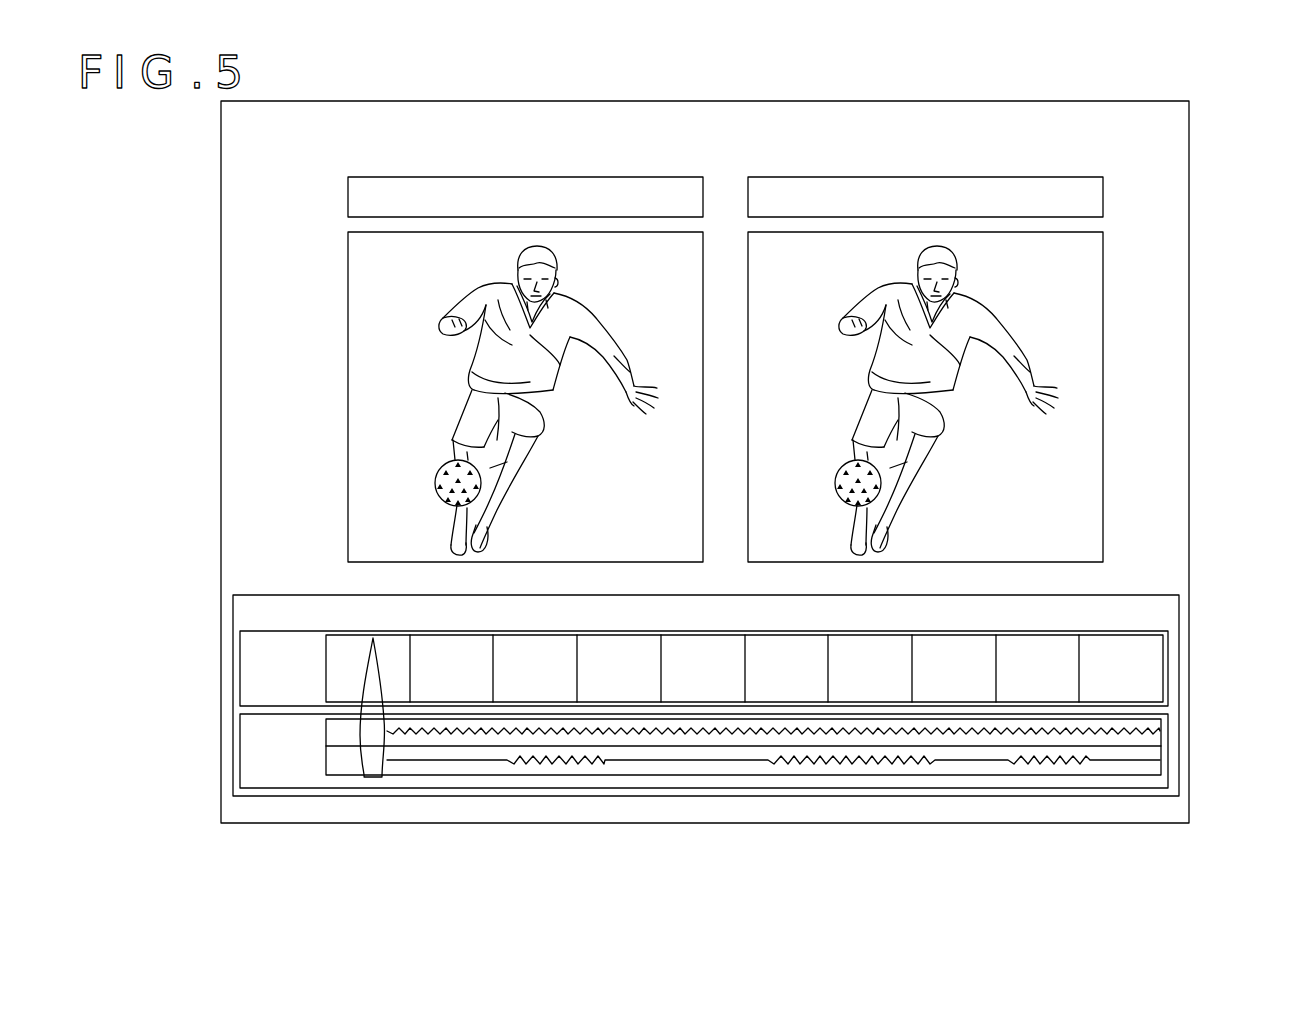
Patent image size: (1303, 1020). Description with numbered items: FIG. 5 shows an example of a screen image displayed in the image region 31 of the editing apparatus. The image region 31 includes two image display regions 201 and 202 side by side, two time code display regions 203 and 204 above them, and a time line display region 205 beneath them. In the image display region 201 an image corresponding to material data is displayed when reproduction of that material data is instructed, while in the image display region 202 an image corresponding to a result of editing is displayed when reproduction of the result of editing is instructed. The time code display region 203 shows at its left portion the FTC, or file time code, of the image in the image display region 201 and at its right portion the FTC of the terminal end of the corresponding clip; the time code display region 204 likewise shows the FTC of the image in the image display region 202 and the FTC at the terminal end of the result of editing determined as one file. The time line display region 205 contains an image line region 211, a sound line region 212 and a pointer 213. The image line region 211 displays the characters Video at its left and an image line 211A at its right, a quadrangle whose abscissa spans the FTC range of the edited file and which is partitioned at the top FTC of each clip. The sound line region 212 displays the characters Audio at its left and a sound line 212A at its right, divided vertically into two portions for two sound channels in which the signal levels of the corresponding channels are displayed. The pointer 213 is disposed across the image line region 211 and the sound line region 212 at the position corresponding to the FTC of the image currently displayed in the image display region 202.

The image region 31 is at (1189, 178).
The image display region 201 is at (348, 403).
The image display region 202 is at (1103, 398).
The time code display region 203 is at (527, 177).
The time code display region 204 is at (924, 177).
The time line display region 205 is at (284, 595).
The image line region 211 is at (1168, 665).
The image line 211A is at (1116, 631).
The sound line region 212 is at (1168, 737).
The sound line 212A is at (1113, 771).
The pointer 213 is at (385, 753).